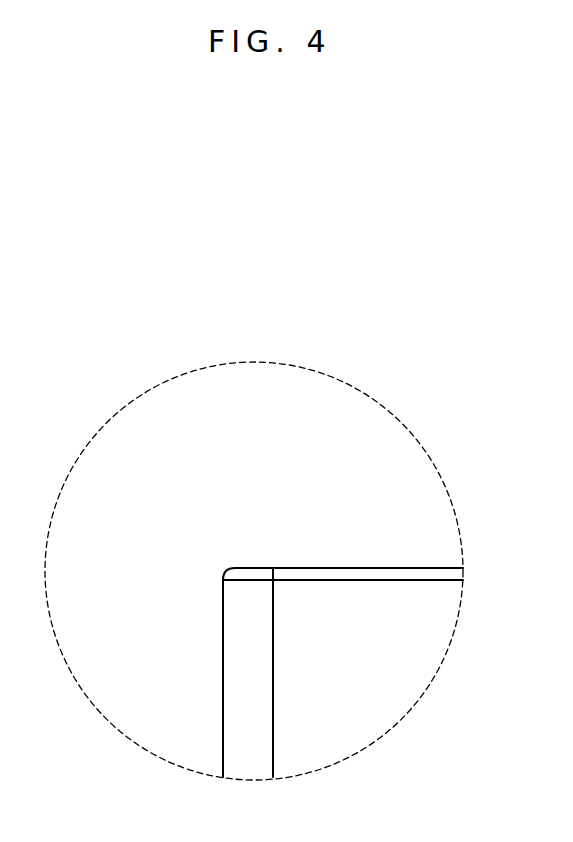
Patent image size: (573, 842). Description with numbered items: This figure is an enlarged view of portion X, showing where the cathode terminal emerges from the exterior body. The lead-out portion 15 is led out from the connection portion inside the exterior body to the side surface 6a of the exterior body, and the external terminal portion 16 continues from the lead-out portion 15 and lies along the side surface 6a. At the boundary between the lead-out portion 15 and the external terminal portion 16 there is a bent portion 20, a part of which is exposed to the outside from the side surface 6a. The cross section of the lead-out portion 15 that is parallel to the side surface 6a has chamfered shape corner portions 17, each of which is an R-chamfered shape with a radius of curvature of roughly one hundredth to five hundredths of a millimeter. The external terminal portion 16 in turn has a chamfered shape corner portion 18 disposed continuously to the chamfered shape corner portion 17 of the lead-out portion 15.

The portion X is at (349, 384).
The corner portion 17 is at (222, 567).
The corner portion 18 is at (425, 568).
The external terminal portion 16 is at (403, 640).
The bent portion 20 is at (230, 665).
The lead-out portion 15 is at (257, 697).
The side surface 6a is at (123, 650).